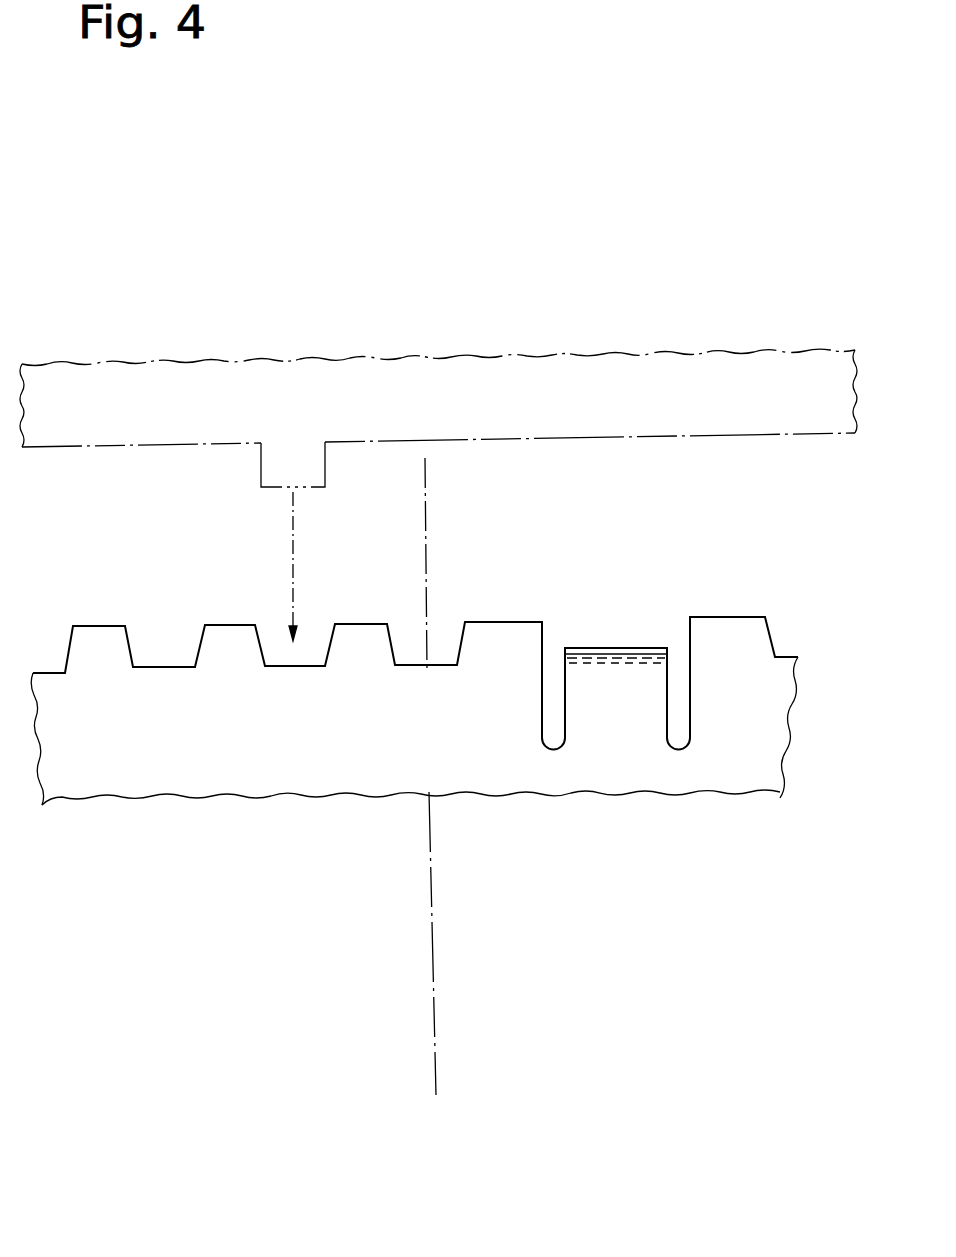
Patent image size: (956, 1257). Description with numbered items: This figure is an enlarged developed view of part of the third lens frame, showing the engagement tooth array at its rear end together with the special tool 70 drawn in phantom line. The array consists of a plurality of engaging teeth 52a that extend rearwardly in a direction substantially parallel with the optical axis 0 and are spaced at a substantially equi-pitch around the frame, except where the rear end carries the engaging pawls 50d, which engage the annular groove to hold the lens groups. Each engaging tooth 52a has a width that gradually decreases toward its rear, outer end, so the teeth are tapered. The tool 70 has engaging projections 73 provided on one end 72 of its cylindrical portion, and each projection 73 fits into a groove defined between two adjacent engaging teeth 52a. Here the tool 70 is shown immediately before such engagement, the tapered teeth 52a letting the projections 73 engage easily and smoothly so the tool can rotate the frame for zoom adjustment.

The special tool 70 is at (636, 372).
The one end of the cylindrical portion 72 is at (748, 433).
The engaging projections 73 is at (270, 466).
The engaging teeth 52a is at (100, 643).
The engaging pawls 50d is at (612, 687).
The optical axis 0 is at (433, 984).